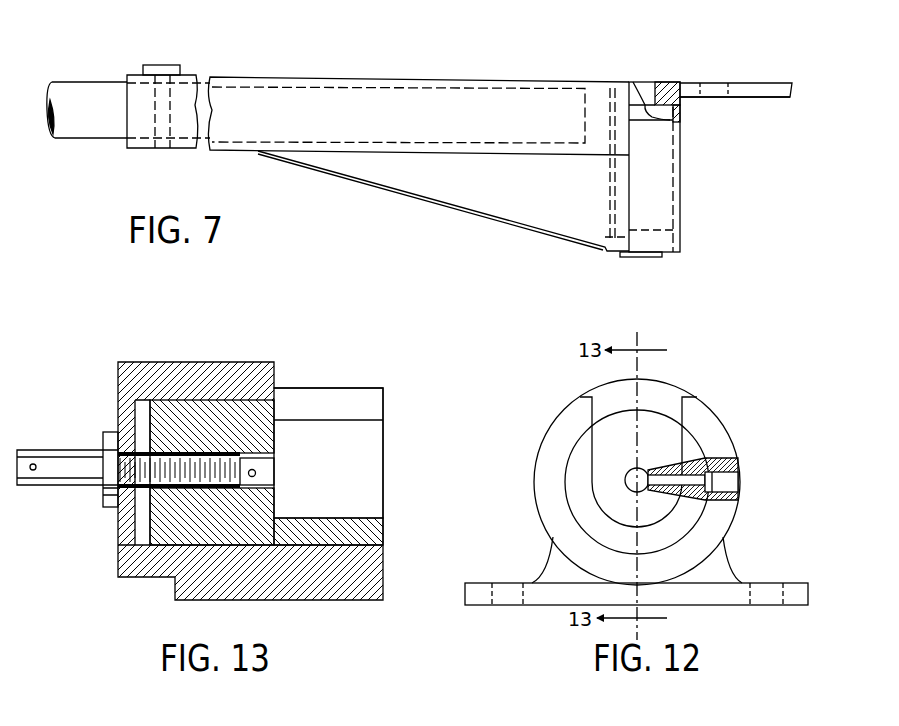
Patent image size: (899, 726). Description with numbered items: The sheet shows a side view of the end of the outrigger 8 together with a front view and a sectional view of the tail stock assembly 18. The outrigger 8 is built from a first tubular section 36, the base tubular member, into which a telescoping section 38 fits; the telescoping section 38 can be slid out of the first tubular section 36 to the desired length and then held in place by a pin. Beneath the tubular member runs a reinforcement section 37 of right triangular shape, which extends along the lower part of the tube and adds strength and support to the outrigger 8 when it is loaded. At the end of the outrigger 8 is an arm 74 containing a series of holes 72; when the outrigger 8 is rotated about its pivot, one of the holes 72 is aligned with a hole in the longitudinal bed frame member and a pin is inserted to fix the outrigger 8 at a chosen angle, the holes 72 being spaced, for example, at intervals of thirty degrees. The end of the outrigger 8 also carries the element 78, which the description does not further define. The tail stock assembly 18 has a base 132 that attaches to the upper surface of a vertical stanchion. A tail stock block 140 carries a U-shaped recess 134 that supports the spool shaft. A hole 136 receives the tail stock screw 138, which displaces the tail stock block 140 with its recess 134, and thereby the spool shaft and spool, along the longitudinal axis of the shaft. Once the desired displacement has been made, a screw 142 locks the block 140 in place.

In FIG. 7, the outrigger 8 is at (257, 155).
In FIG. 7, the first tubular section 36 is at (407, 88).
In FIG. 7, the reinforcement section 37 is at (448, 175).
In FIG. 7, the telescoping section 38 is at (83, 82).
In FIG. 7, the holes 72 is at (727, 93).
In FIG. 7, the arm 74 is at (762, 88).
In FIG. 7, the mounting plate 78 is at (643, 58).
In FIG. 13, the tail stock assembly 18 is at (272, 328).
In FIG. 12, the tail stock assembly 18 is at (757, 402).
In FIG. 12, the base 132 is at (482, 583).
In FIG. 13, the U-shaped recess 134 is at (365, 445).
In FIG. 12, the U-shaped recess 134 is at (595, 442).
In FIG. 13, the hole 136 is at (130, 452).
In FIG. 13, the tail stock screw 138 is at (85, 472).
In FIG. 13, the tail stock block 140 is at (255, 430).
In FIG. 12, the screw 142 is at (725, 483).